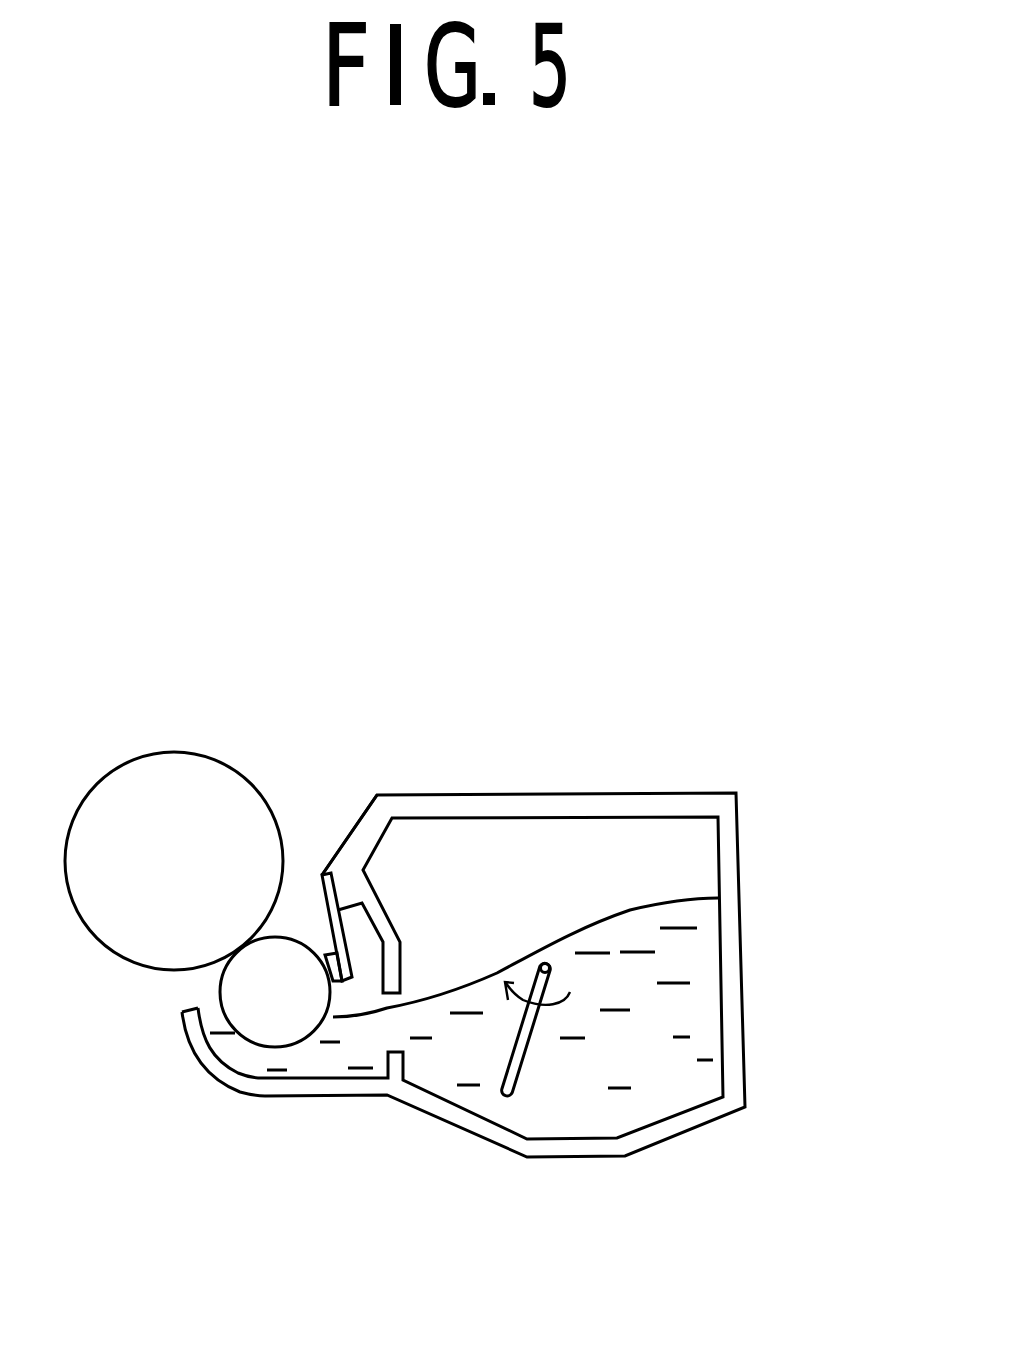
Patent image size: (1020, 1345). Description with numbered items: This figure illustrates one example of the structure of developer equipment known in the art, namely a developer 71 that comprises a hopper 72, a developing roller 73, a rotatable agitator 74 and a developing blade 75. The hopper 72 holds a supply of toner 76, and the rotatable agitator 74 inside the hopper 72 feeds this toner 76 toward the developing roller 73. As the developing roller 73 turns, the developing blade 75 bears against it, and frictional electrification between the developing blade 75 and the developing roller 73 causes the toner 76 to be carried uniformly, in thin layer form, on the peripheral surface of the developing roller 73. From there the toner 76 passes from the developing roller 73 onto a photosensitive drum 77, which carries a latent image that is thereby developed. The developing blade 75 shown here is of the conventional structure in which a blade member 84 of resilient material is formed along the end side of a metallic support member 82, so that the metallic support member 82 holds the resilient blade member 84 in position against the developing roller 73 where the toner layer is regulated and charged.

The developer 71 is at (447, 645).
The hopper 72 is at (733, 956).
The developing roller 73 is at (232, 987).
The rotatable agitator 74 is at (500, 1063).
The developing blade 75 is at (311, 921).
The toner 76 is at (697, 1060).
The photosensitive drum 77 is at (158, 768).
The metallic support member 82 is at (340, 958).
The blade member 84 is at (342, 988).